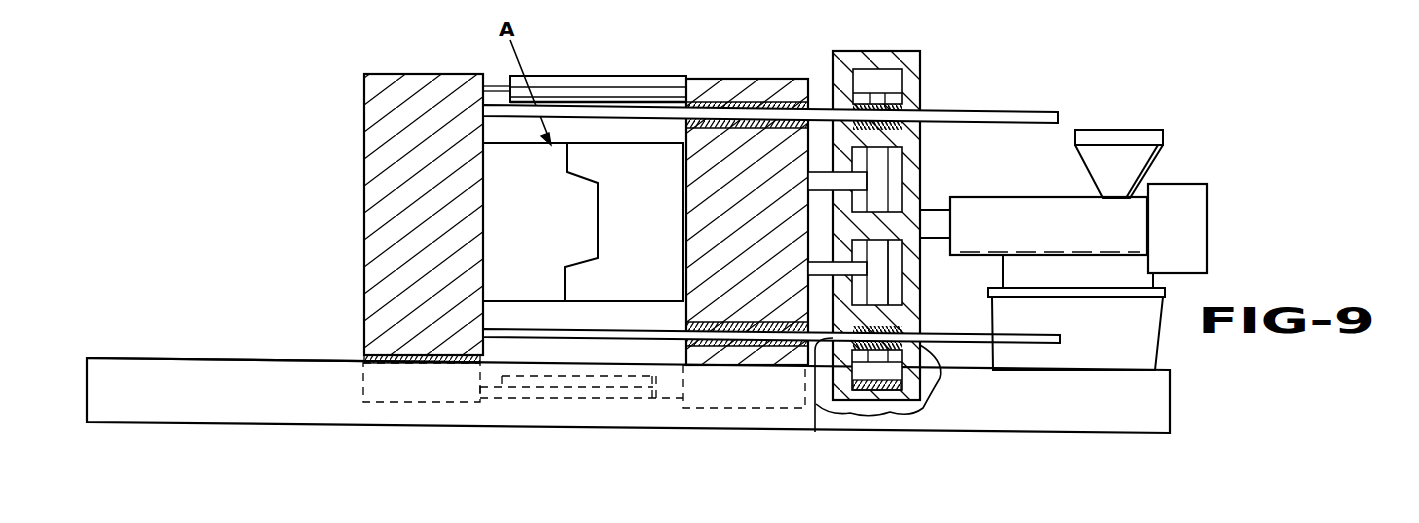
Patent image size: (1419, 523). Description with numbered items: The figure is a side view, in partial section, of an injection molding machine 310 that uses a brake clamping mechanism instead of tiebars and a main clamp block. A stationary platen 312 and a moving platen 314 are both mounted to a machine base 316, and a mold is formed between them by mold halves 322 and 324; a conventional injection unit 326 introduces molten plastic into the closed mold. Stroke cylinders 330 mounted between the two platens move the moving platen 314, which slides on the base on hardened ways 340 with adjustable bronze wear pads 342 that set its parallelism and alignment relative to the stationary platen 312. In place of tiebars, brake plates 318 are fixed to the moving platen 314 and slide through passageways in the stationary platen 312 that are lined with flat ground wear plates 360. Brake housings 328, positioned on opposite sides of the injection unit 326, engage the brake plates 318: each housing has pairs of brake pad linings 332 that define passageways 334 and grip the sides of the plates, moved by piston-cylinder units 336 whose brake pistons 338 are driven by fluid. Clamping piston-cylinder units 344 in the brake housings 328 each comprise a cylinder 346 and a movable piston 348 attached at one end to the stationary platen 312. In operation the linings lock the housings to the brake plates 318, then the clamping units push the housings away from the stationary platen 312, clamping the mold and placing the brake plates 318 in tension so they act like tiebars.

The injection molding machine 310 is at (338, 172).
The stationary platen 312 is at (777, 90).
The moving platen 314 is at (432, 90).
The machine base 316 is at (1098, 408).
The brake plates 318 is at (1035, 110).
The mold half 322 is at (541, 216).
The mold half 324 is at (655, 226).
The injection unit 326 is at (1145, 140).
The brake housings 328 is at (852, 62).
The stroke cylinders 330 is at (601, 76).
The brake pad linings 332 is at (900, 112).
The passageways 334 is at (868, 397).
The piston-cylinder units 336 is at (876, 370).
The brake pistons 338 is at (893, 83).
The hardened ways 340 is at (247, 354).
The wear pads 342 is at (416, 366).
The clamping piston-cylinder units 344 is at (876, 183).
The cylinder 346 is at (893, 266).
The movable piston 348 is at (878, 292).
The wear plates 360 is at (735, 106).